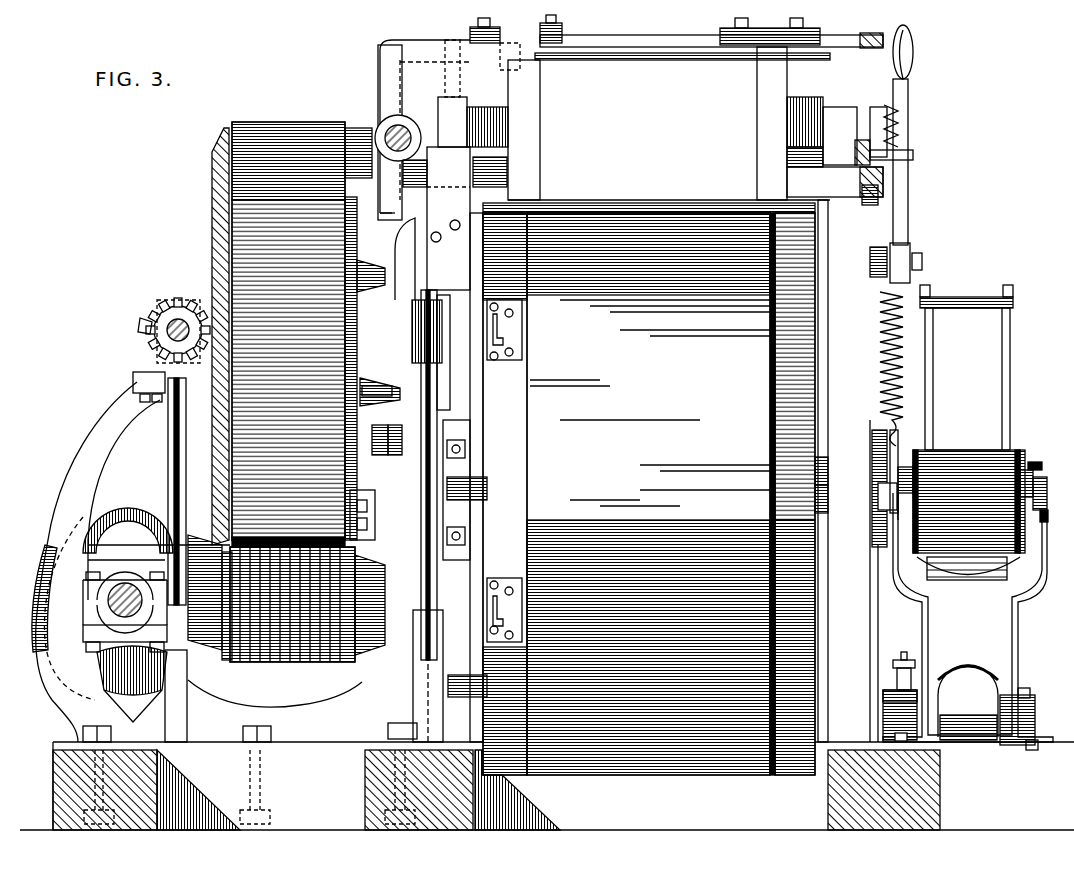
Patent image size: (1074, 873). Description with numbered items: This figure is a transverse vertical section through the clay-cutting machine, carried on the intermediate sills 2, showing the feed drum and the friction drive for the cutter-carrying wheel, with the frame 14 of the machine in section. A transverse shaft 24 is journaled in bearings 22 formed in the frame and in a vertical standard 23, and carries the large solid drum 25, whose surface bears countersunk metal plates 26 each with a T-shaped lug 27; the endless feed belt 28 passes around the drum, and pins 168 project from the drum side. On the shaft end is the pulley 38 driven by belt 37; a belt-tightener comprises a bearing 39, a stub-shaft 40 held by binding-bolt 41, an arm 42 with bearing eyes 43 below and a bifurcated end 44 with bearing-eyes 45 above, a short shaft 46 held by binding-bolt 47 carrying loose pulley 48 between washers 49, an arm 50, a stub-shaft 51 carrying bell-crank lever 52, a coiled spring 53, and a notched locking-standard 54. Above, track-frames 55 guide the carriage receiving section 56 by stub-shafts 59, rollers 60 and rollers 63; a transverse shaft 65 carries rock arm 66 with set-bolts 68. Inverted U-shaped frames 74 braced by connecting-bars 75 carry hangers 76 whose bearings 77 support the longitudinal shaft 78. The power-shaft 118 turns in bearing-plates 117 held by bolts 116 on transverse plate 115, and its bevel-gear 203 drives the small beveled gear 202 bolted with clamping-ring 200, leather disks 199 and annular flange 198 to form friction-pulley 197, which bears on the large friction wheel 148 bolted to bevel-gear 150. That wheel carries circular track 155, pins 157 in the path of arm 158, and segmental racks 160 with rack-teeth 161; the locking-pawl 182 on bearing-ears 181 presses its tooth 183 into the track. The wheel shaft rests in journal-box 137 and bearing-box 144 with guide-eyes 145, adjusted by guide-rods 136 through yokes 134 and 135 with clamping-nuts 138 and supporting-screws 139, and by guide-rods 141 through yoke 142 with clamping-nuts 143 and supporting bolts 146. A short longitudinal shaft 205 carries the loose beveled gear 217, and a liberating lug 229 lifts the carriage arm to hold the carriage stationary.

The intermediate sills 2 is at (53, 790).
The frame 14 is at (693, 60).
The bearings 22 is at (484, 476).
The vertical standard 23 is at (420, 693).
The transverse shaft 24 is at (815, 493).
The large drum 25 is at (485, 452).
The countersunk metal plates 26 is at (512, 330).
The T-shaped lug 27 is at (516, 340).
The endless feed belt 28 is at (651, 494).
The belt 37 is at (966, 450).
The pulley 38 is at (967, 379).
The bearing 39 is at (900, 715).
The stub-shaft 40 is at (972, 740).
The binding-bolt 41 is at (904, 670).
The arm 42 is at (968, 617).
The bearing eyes 43 is at (940, 700).
The bifurcated upper end 44 is at (1035, 560).
The bearing-eyes 45 is at (1045, 514).
The short shaft 46 is at (1047, 492).
The binding-bolt 47 is at (1040, 470).
The loose pulley 48 is at (1021, 450).
The washers 49 is at (1032, 460).
The arm 50 is at (880, 468).
The stub-shaft 51 is at (923, 258).
The bell-crank lever 52 is at (909, 215).
The coiled spring 53 is at (880, 368).
The notched locking-standard 54 is at (900, 148).
The track-frames 55 is at (843, 108).
The receiving section 56 is at (635, 203).
The stub-shafts 59 is at (508, 172).
The rollers 60 is at (470, 186).
The rollers 63 is at (470, 127).
The transverse shaft 65 is at (640, 47).
The rock arm 66 is at (548, 55).
The set-bolts 68 is at (510, 50).
The inverted U-shaped frames 74 is at (541, 127).
The connecting-bars 75 is at (866, 50).
The hangers 76 is at (425, 126).
The bearings 77 is at (383, 128).
The longitudinally-disposed shaft 78 is at (413, 128).
The transverse plate 115 is at (88, 648).
The bolts 116 is at (100, 660).
The bearing-plates 117 is at (90, 604).
The power-shaft 118 is at (122, 575).
The upper yoke 134 is at (133, 378).
The lower yoke 135 is at (177, 696).
The vertical guide-rods 136 is at (172, 462).
The journal-box 137 is at (145, 306).
The clamping-nuts 138 is at (170, 304).
The supporting-screws 139 is at (150, 403).
The vertical guide-rods 141 is at (427, 499).
The yoke 142 is at (439, 382).
The clamping-nuts 143 is at (420, 300).
The bearing-box 144 is at (412, 331).
The guide-eyes 145 is at (430, 331).
The journal-box-supporting bolts 146 is at (421, 414).
The large friction wheel 148 is at (275, 122).
The large bevel-gear 150 is at (212, 198).
The circular track 155 is at (345, 330).
The inwardly disposed pins 157 is at (345, 278).
The arm 158 is at (375, 219).
The segmentally-shaped racks 160 is at (375, 522).
The rack-teeth 161 is at (361, 161).
The pins 168 is at (487, 492).
The bearing-ears 181 is at (395, 455).
The locking-pawl 182 is at (380, 455).
The tooth 183 is at (375, 402).
The friction-pulley 197 is at (310, 662).
The annular flange 198 is at (228, 617).
The leather disks 199 is at (292, 613).
The clamping-ring 200 is at (364, 617).
The small beveled gear 202 is at (208, 546).
The bevel-gear 203 is at (51, 608).
The short longitudinal shaft 205 is at (178, 331).
The beveled gear 217 is at (138, 326).
The liberating lug 229 is at (439, 68).